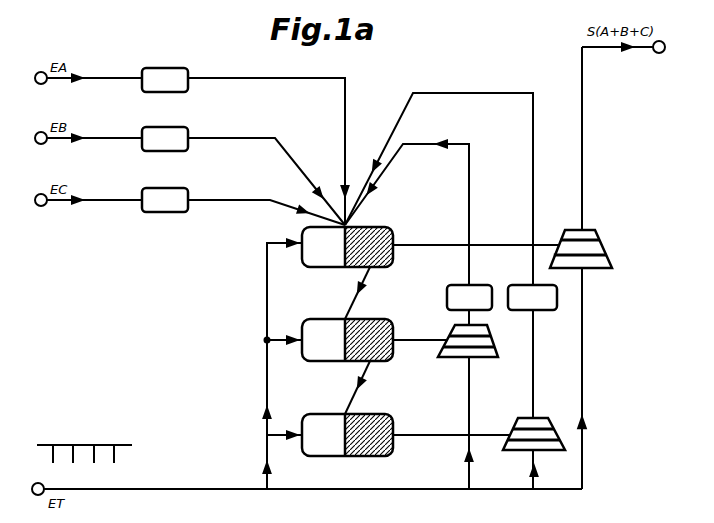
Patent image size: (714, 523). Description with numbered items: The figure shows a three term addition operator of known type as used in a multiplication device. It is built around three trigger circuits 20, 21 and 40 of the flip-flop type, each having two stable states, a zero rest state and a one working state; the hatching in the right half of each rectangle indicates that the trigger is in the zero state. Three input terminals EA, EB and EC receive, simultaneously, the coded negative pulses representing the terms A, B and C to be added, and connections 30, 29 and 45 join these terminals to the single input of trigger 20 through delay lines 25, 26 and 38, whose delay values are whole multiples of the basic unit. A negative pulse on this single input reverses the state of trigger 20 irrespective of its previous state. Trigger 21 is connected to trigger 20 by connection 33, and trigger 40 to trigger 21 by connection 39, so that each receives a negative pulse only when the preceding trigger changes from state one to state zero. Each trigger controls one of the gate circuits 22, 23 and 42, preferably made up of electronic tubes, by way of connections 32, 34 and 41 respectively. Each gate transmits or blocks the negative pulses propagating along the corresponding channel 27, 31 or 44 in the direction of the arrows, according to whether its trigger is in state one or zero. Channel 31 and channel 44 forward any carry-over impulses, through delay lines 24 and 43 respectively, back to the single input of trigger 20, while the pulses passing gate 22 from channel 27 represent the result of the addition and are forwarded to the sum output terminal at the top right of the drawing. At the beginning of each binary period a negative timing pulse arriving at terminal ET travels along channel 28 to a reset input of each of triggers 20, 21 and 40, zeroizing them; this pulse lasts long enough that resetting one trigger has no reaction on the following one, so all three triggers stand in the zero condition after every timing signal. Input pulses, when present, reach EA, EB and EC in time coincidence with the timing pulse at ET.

The trigger circuit 20 is at (316, 270).
The trigger circuit 21 is at (307, 364).
The gate circuit 22 is at (597, 232).
The gate circuit 23 is at (478, 359).
The delay line 24 is at (473, 284).
The delay line 25 is at (188, 70).
The delay line 26 is at (188, 130).
The channel 27 is at (309, 492).
The channel 28 is at (266, 331).
The connection 29 is at (294, 162).
The connection 30 is at (345, 130).
The channel 31 is at (393, 163).
The connection 32 is at (427, 247).
The connection 33 is at (364, 283).
The connection 34 is at (410, 345).
The delay line 38 is at (188, 190).
The connection 39 is at (364, 378).
The trigger circuit 40 is at (311, 459).
The connection 41 is at (427, 437).
The gate circuit 42 is at (541, 417).
The delay line 43 is at (545, 312).
The channel 44 is at (420, 97).
The connection 45 is at (252, 203).